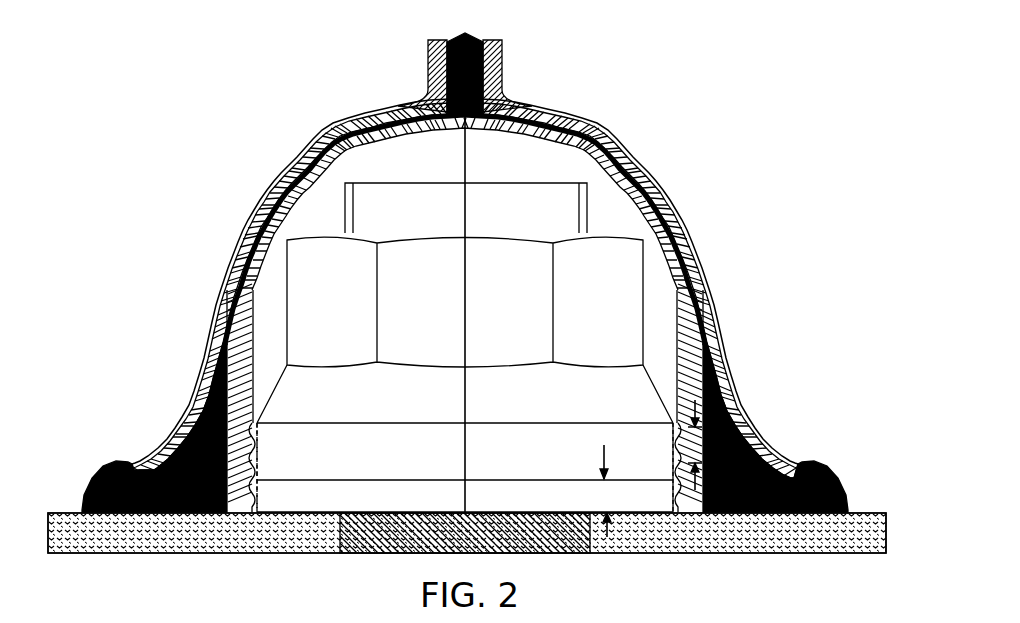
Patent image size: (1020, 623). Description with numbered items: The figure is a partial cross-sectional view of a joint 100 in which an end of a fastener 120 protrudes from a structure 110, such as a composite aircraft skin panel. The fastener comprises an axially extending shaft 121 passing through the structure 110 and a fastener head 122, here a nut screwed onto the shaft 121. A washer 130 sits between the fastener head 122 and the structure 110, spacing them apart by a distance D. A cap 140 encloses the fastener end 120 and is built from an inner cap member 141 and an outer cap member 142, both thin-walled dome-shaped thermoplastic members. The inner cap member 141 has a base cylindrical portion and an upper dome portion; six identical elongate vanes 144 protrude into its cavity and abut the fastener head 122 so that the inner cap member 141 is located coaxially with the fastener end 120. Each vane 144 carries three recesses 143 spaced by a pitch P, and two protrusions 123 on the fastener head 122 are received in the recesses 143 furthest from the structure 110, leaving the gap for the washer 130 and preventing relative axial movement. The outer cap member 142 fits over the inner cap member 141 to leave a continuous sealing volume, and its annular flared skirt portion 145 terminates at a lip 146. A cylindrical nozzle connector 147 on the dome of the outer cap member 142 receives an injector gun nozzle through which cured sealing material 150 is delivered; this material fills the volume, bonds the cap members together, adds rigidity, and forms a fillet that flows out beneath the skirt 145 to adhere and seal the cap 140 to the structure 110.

The joint 100 is at (745, 85).
The structure 110 is at (315, 540).
The end of a fastener 120 is at (522, 312).
The axially extending shaft 121 is at (560, 208).
The fastener head 122 is at (615, 350).
The protrusions 123 is at (257, 458).
The washer 130 is at (310, 498).
The cap 140 is at (450, 272).
The inner cap member 141 is at (245, 308).
The outer cap member 142 is at (238, 258).
The recesses 143 is at (186, 432).
The vanes 144 is at (238, 385).
The annular flared skirt portion 145 is at (737, 407).
The lip 146 is at (797, 462).
The cylindrical nozzle connector 147 is at (490, 70).
The cured sealing material 150 is at (110, 462).